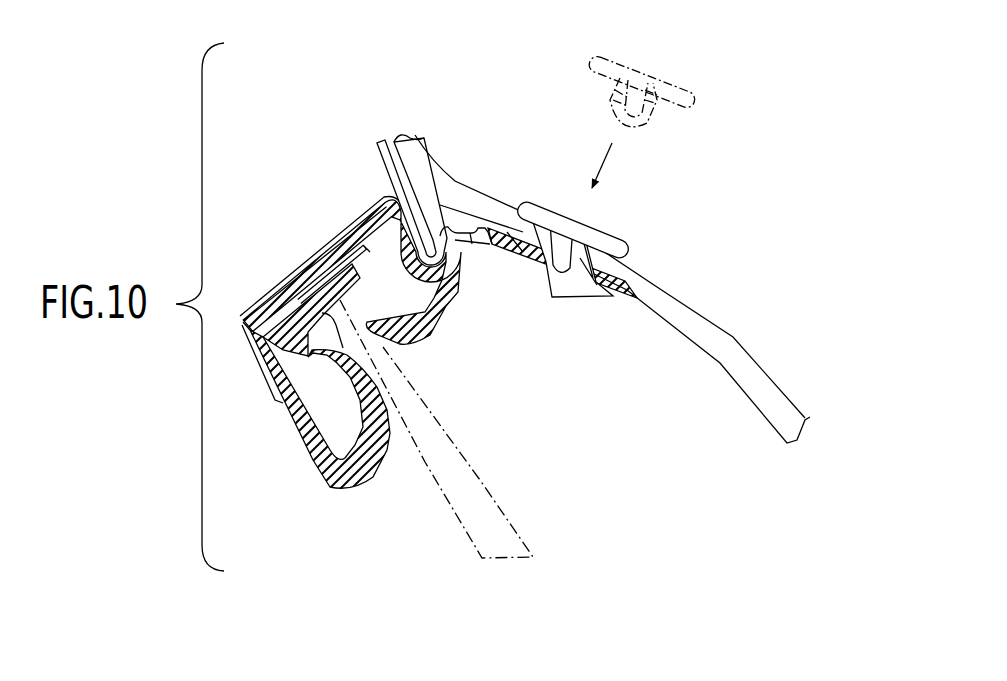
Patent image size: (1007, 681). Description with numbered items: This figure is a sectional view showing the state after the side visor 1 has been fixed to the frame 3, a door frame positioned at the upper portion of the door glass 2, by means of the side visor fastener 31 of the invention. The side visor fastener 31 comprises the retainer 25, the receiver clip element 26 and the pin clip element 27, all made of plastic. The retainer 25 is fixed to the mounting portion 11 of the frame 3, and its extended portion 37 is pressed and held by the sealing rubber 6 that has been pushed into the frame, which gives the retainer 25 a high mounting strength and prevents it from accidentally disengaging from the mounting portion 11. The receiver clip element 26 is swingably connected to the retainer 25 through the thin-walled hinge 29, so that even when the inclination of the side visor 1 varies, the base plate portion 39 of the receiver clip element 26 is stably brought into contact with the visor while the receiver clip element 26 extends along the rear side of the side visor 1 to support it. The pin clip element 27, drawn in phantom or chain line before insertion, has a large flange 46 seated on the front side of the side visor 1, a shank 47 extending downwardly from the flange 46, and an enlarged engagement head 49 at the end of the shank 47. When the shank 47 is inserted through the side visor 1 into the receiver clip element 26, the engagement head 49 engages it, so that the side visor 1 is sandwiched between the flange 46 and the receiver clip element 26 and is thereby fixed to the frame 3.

The side visor 1 is at (676, 295).
The door glass 2 is at (522, 530).
The frame 3 is at (300, 262).
The sealing rubber 6 is at (313, 445).
The mounting portion 11 is at (410, 207).
The retainer 25 is at (462, 229).
The receiver clip element 26 is at (522, 232).
The pin clip element 27 is at (630, 151).
The thin-walled hinge 29 is at (473, 246).
The side visor fastener 31 is at (562, 130).
The extended portion 37 is at (350, 232).
The base plate portion 39 is at (532, 240).
The flange 46 is at (607, 218).
The shank 47 is at (652, 113).
The engagement head 49 is at (612, 108).